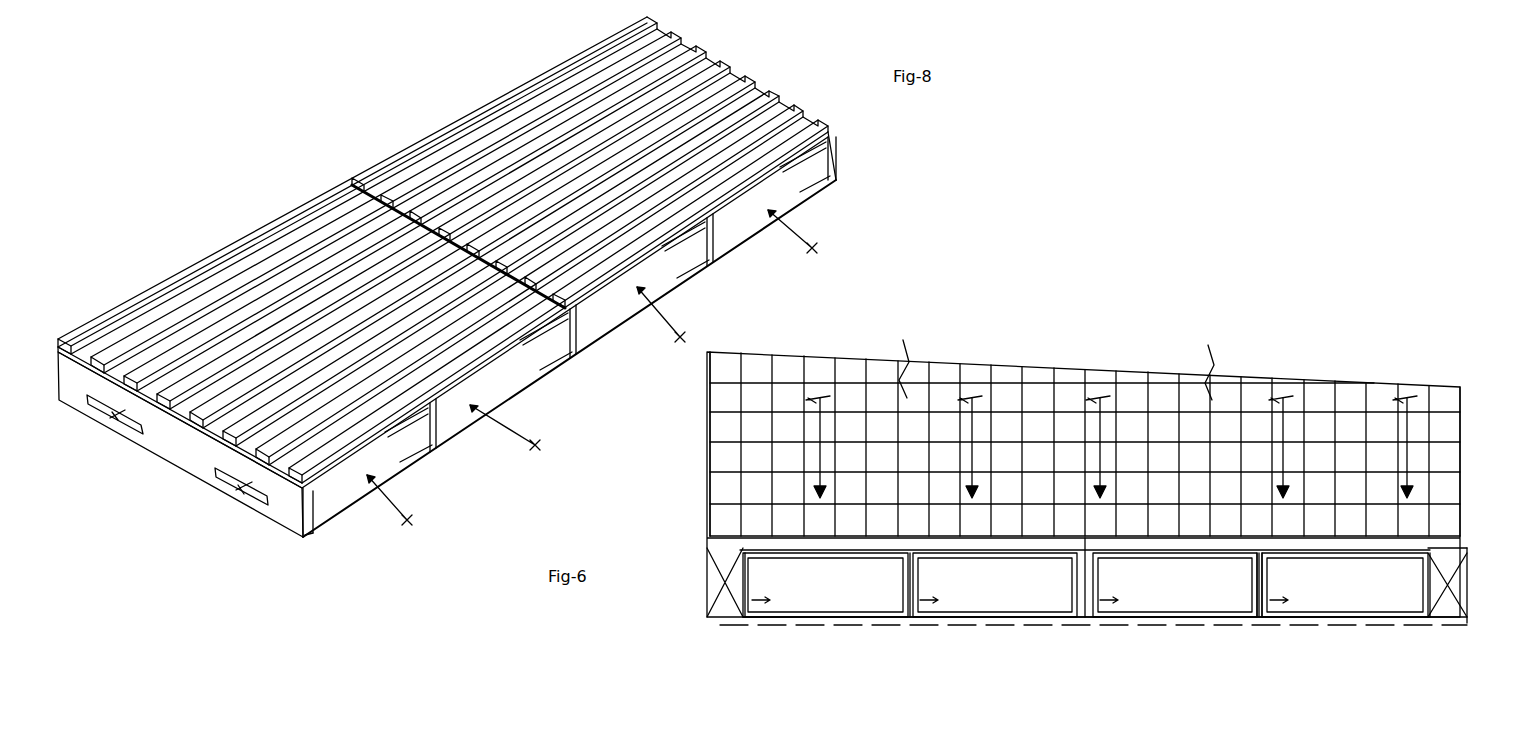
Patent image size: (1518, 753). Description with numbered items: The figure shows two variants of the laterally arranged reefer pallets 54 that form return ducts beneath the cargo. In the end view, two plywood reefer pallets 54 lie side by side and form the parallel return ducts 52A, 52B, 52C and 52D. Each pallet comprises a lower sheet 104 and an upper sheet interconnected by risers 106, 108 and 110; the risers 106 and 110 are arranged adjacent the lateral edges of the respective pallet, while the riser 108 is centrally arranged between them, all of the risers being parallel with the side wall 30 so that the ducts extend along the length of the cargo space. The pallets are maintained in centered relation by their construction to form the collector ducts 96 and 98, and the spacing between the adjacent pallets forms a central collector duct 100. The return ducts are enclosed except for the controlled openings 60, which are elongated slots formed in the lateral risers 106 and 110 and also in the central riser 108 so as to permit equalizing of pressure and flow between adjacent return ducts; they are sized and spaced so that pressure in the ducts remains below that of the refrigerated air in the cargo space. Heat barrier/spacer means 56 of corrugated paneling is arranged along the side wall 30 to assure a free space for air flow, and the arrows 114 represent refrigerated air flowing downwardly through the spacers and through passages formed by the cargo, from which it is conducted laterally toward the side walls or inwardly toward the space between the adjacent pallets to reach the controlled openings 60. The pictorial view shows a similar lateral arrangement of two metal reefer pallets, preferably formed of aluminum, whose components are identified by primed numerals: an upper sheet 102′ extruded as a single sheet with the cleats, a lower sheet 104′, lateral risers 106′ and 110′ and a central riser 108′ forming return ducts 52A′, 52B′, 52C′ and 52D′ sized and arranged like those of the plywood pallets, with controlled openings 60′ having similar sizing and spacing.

In FIG. 8, the reefer pallet 54 is at (183, 278).
In FIG. 8, the upper sheet 102' is at (472, 368).
In FIG. 8, the controlled opening 60' is at (177, 450).
In FIG. 8, the lower sheet 104' is at (569, 358).
In FIG. 8, the riser 106' is at (612, 332).
In FIG. 8, the riser 108' is at (607, 309).
In FIG. 8, the riser 110 is at (569, 334).
In FIG. 8, the riser 110' is at (330, 561).
In FIG. 8, the return duct 52A' is at (373, 514).
In FIG. 8, the return duct 52B' is at (505, 418).
In FIG. 8, the return duct 52C' is at (649, 324).
In FIG. 8, the return duct 52D' is at (792, 238).
In FIG. 6, the side wall 30 is at (707, 422).
In FIG. 6, the heat barrier/spacer means 56 is at (722, 351).
In FIG. 6, the arrows 114 is at (972, 457).
In FIG. 6, the return duct 52A is at (825, 585).
In FIG. 6, the return duct 52B is at (995, 585).
In FIG. 6, the return duct 52C is at (1175, 585).
In FIG. 6, the return duct 52D is at (1345, 585).
In FIG. 6, the controlled opening 60 is at (1051, 612).
In FIG. 6, the lower sheet 104 is at (1085, 648).
In FIG. 6, the central collector duct 100 is at (1085, 622).
In FIG. 6, the riser 108 is at (1235, 567).
In FIG. 6, the collector duct 98 is at (723, 588).
In FIG. 6, the collector duct 96 is at (1443, 594).
In FIG. 6, the riser 106 is at (1408, 611).